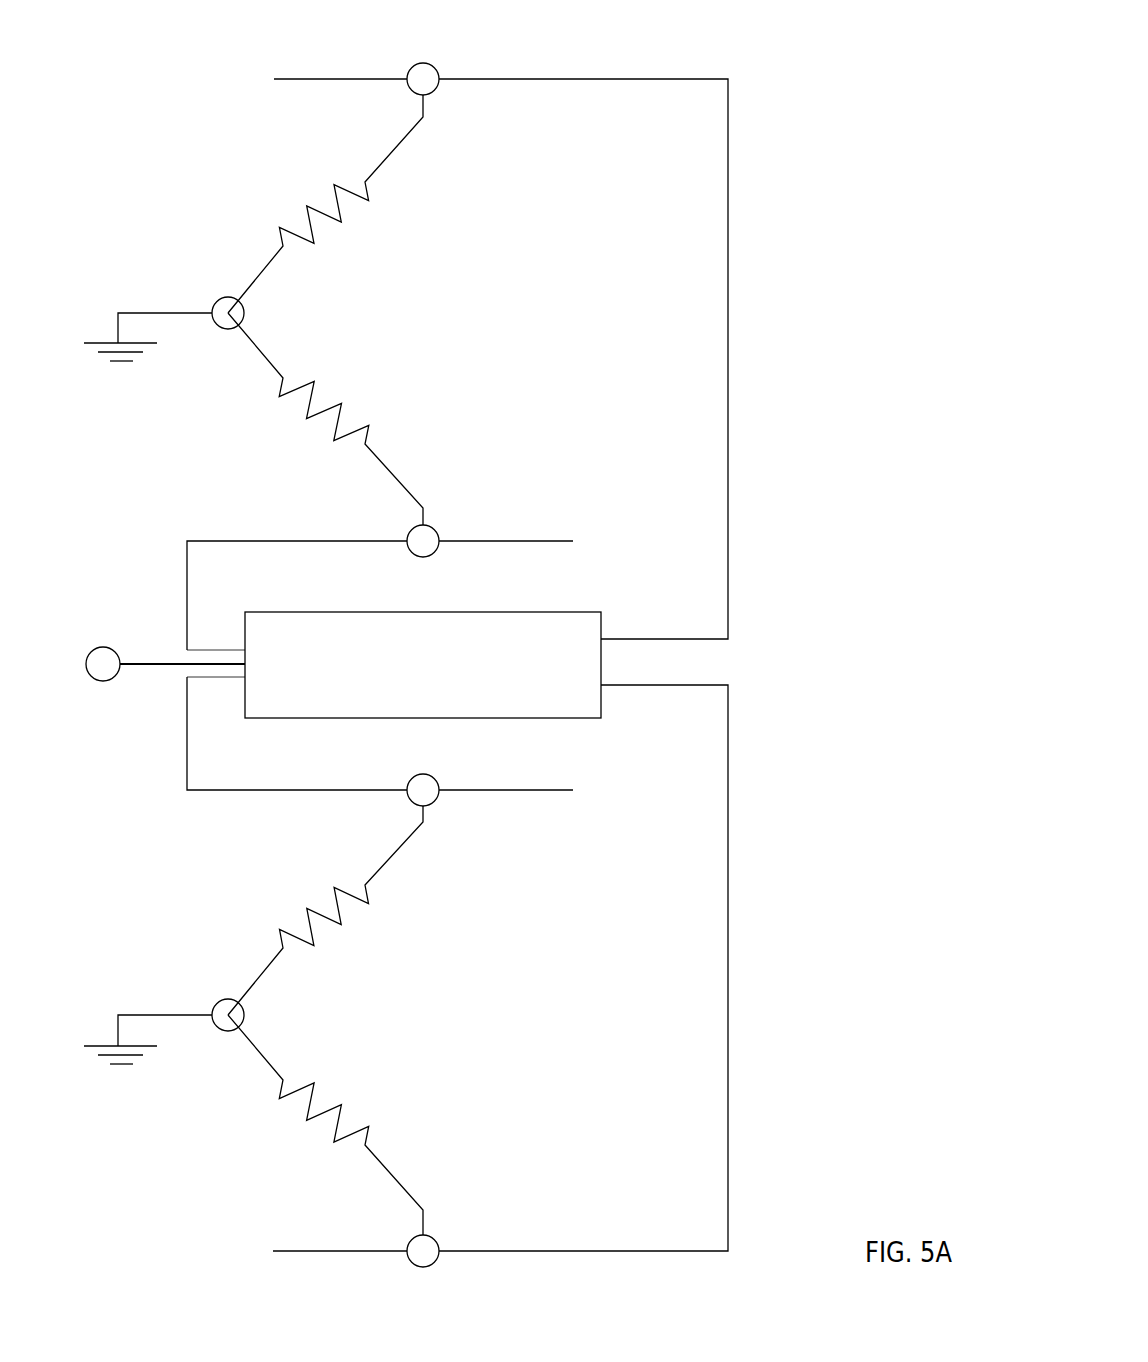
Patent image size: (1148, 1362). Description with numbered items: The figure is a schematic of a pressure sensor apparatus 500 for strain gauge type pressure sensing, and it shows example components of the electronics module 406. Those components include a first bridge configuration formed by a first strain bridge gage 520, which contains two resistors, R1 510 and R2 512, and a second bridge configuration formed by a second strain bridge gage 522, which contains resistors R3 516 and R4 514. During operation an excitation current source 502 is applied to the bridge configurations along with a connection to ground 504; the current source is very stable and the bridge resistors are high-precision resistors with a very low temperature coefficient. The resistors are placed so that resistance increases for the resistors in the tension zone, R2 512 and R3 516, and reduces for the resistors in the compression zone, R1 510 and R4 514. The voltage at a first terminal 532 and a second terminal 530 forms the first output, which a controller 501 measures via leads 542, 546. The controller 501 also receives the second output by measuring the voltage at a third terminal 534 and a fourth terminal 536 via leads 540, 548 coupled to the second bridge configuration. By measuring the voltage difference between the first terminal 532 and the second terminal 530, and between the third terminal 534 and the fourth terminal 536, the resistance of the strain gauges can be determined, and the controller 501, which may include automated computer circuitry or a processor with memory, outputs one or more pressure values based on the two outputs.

The pressure sensor apparatus 500 is at (909, 100).
The electronics module 406 is at (802, 333).
The controller 501 is at (313, 681).
The excitation current source 502 is at (368, 644).
The ground 504 is at (199, 365).
The resistor R1 510 is at (412, 227).
The resistor R2 512 is at (325, 419).
The resistor R4 514 is at (409, 923).
The resistor R3 516 is at (325, 1125).
The first strain bridge gage 520 is at (384, 310).
The second strain bridge gage 522 is at (350, 1020).
The second terminal 530 is at (441, 71).
The first terminal 532 is at (443, 527).
The third terminal 534 is at (443, 777).
The fourth terminal 536 is at (443, 1237).
The lead 540 is at (357, 787).
The lead 542 is at (357, 538).
The lead 546 is at (731, 445).
The lead 548 is at (735, 940).